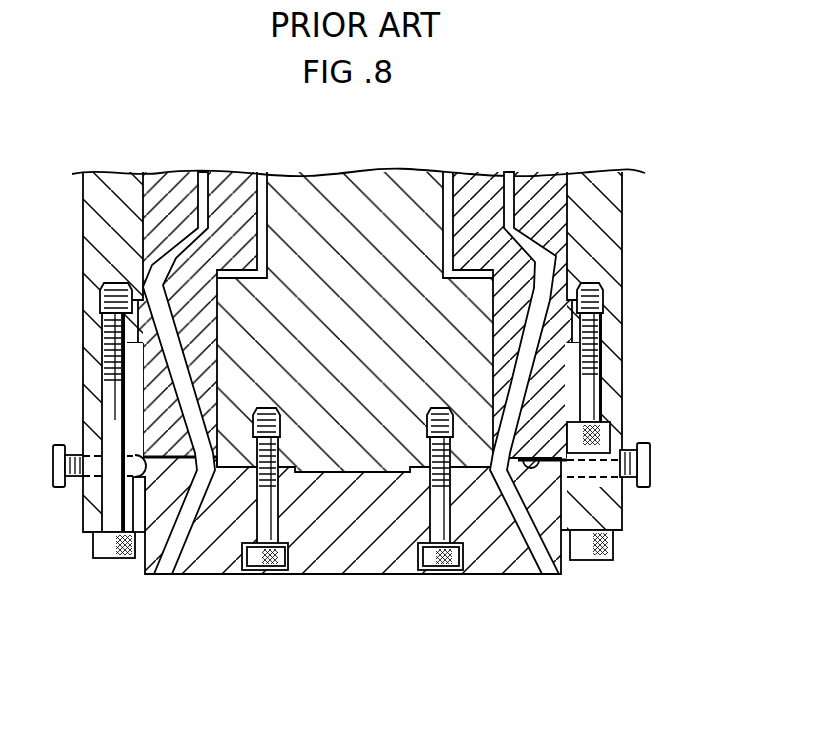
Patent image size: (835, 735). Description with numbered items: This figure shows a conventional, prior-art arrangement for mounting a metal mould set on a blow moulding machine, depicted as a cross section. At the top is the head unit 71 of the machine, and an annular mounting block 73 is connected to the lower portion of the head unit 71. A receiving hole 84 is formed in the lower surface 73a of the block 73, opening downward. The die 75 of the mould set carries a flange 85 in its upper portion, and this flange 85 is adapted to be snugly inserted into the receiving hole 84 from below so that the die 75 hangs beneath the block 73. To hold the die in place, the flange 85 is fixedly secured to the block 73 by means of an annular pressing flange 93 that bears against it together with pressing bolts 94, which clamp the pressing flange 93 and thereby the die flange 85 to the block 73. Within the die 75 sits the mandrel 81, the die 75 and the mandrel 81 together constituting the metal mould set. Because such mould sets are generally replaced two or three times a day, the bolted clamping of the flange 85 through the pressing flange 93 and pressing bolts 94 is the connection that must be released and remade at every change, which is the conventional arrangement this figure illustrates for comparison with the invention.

The head unit 71 is at (640, 246).
The annular mounting block 73 is at (627, 364).
The lower surface 73a is at (568, 417).
The die 75 is at (556, 580).
The mandrel 81 is at (344, 560).
The receiving hole 84 is at (122, 425).
The flange 85 is at (134, 450).
The annular pressing flange 93 is at (90, 513).
The pressing bolts 94 is at (107, 552).